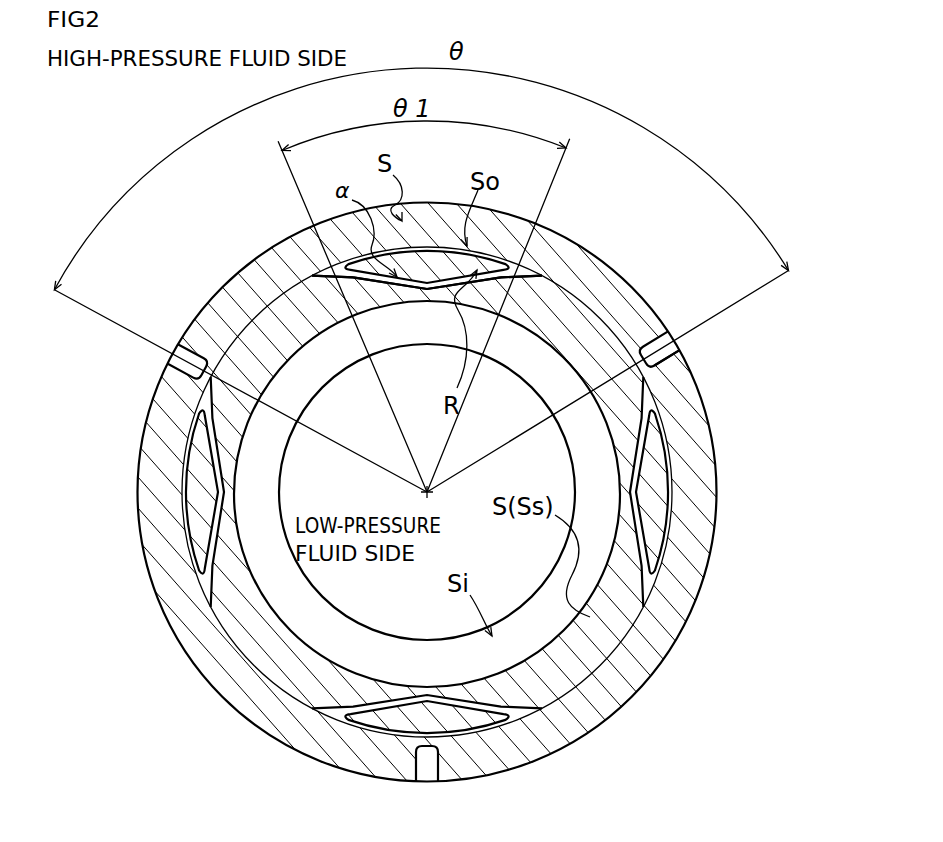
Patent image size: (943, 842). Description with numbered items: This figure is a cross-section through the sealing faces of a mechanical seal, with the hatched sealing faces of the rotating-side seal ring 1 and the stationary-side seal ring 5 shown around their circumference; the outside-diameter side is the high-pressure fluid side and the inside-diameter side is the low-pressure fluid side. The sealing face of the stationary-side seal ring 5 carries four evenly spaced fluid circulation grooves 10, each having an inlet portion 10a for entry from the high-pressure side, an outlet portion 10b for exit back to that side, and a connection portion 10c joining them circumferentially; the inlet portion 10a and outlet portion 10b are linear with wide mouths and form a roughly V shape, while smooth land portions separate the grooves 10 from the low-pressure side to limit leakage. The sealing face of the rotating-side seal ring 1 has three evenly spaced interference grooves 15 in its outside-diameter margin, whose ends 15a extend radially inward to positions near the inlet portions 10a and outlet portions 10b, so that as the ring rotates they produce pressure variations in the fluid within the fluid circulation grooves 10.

The rotating-side seal ring 1 is at (714, 458).
The stationary-side seal ring 5 is at (672, 532).
The fluid circulation groove 10 is at (535, 262).
The inlet portion 10a is at (527, 272).
The outlet portion 10b is at (313, 272).
The connection portion 10c is at (447, 278).
The interference groove 15 is at (187, 345).
The end of interference groove 15a is at (673, 357).